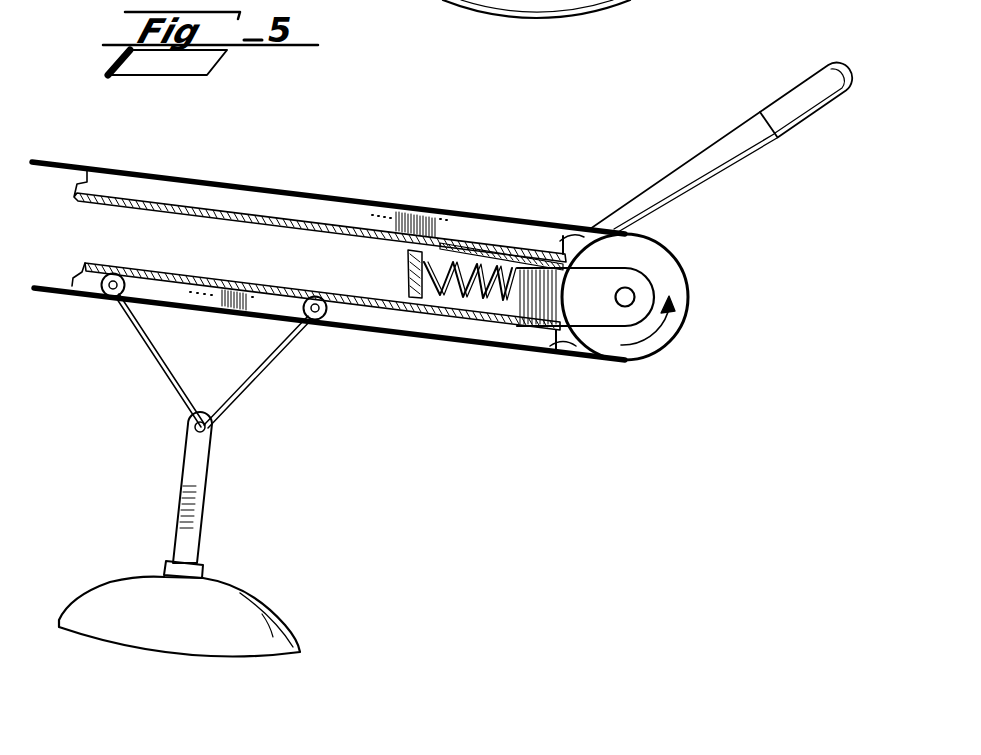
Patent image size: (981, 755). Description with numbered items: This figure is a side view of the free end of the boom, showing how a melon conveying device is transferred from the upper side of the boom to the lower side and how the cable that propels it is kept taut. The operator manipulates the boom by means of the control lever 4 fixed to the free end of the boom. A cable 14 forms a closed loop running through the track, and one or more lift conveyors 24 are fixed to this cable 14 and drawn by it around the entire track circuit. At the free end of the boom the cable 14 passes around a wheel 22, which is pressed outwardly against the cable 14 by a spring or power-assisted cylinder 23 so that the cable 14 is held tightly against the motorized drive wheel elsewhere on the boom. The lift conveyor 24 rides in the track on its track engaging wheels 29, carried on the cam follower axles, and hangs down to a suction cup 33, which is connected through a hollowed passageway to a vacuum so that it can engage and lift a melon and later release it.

The control lever 4 is at (780, 100).
The cable 14 is at (60, 162).
The wheel 22 is at (578, 236).
The spring or power-assisted cylinder 23 is at (487, 250).
The lift conveyor 24 is at (237, 492).
The track engaging wheels 29 is at (102, 288).
The suction cup 33 is at (268, 602).